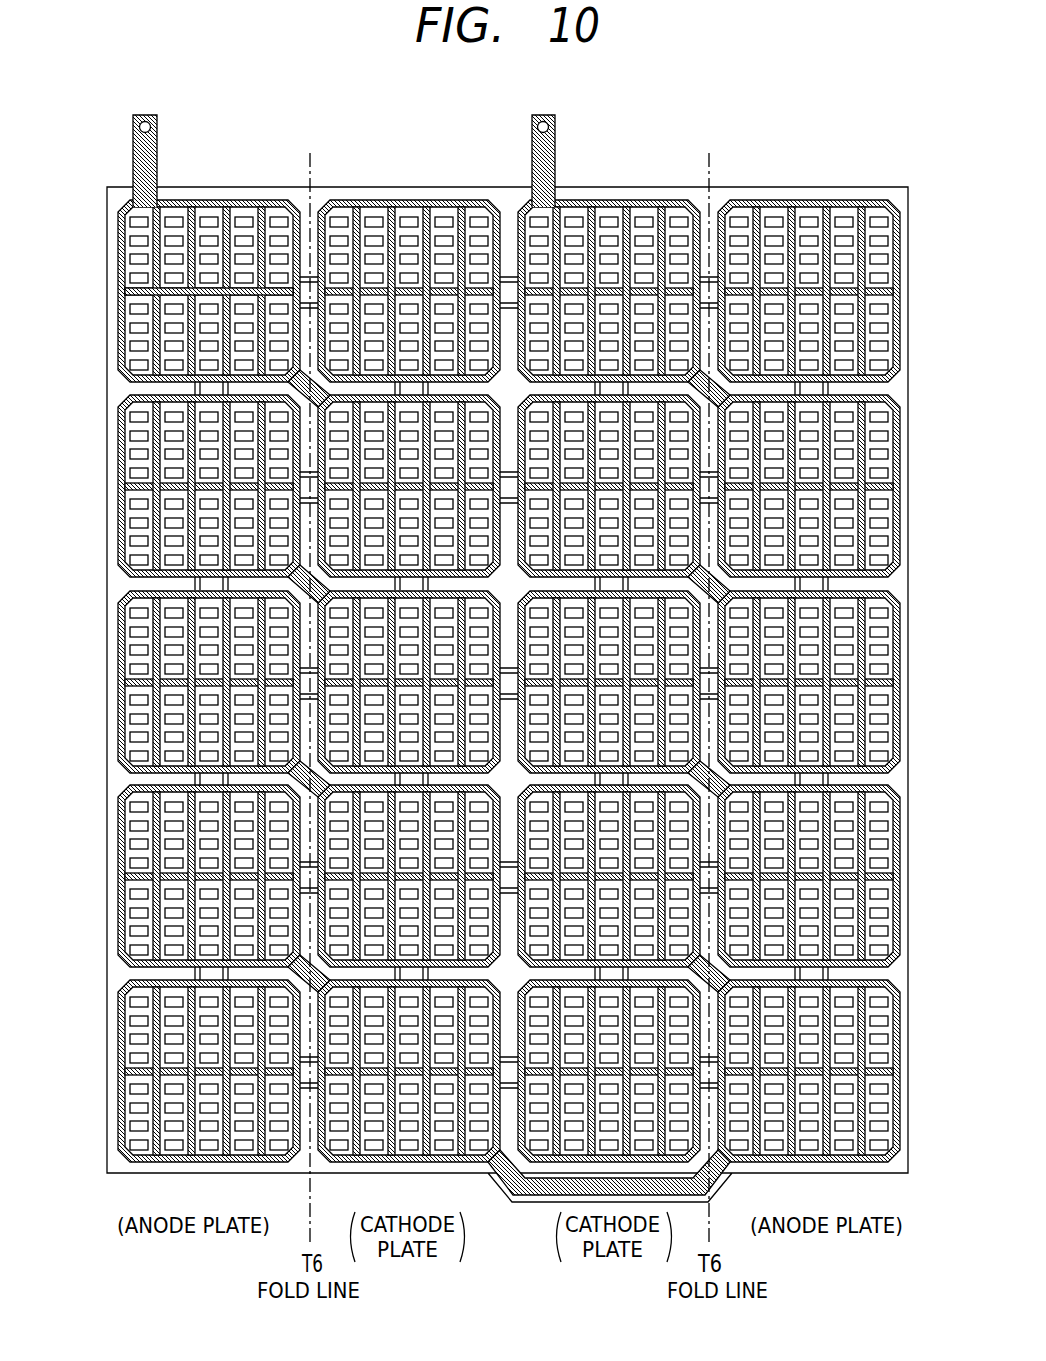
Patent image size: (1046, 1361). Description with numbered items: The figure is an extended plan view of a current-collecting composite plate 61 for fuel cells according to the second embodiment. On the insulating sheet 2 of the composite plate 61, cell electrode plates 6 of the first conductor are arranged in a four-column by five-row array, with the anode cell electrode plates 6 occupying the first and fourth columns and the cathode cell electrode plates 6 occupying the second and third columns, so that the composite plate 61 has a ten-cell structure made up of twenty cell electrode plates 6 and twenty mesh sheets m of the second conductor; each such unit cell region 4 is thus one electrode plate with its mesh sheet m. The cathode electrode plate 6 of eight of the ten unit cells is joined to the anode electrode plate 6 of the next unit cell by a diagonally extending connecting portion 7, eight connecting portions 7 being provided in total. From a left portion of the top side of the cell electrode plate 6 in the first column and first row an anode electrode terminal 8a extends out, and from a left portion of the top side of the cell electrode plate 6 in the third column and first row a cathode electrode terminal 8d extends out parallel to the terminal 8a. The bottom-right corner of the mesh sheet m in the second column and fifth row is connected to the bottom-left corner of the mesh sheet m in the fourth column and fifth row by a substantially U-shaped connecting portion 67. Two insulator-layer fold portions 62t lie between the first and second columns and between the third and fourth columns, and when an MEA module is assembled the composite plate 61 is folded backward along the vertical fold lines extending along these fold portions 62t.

The insulating sheet 2 is at (630, 187).
The unit cell region 4 is at (441, 210).
The cell electrode plate 6 is at (120, 233).
The mesh sheet m is at (120, 299).
The connecting portion 7 is at (293, 372).
The anode electrode terminal 8a is at (158, 154).
The cathode electrode terminal 8d is at (556, 152).
The current-collecting composite plate 61 is at (478, 631).
The insulator-layer fold portion 62t is at (313, 212).
The connecting portion 67 is at (550, 1194).